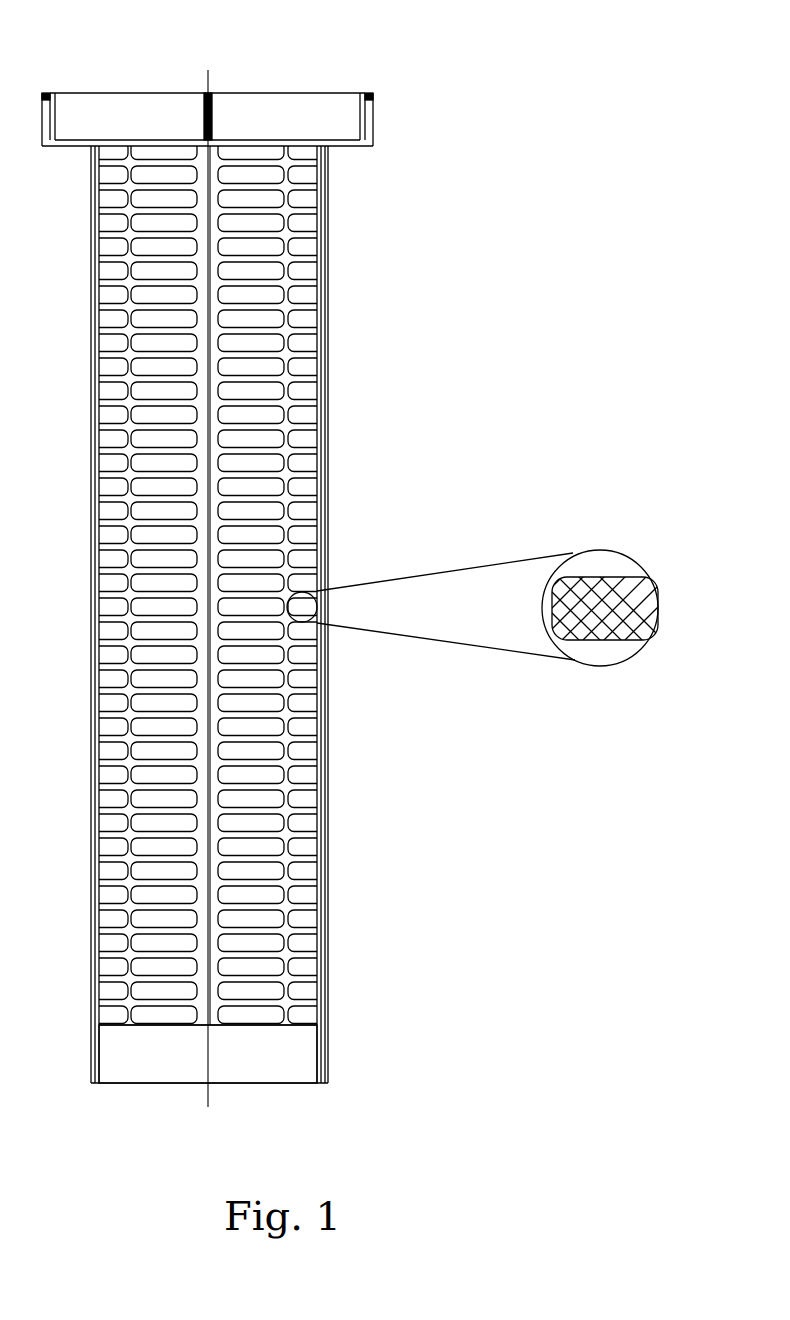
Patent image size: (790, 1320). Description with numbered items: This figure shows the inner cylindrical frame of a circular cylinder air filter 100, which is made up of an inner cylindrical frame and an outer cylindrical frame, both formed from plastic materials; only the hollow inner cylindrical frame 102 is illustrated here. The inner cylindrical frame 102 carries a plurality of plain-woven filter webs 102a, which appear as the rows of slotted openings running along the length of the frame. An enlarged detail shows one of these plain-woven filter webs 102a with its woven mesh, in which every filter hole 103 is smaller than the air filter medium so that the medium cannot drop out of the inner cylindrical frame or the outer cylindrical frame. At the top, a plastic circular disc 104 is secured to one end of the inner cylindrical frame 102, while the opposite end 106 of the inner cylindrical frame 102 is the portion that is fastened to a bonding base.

The circular cylinder air filter 100 is at (330, 62).
The inner cylindrical frame 102 is at (310, 303).
The plain-woven filter webs 102a is at (305, 413).
The filter hole 103 is at (590, 633).
The circular disc 104 is at (97, 107).
The end of the inner cylindrical frame 106 is at (285, 1050).